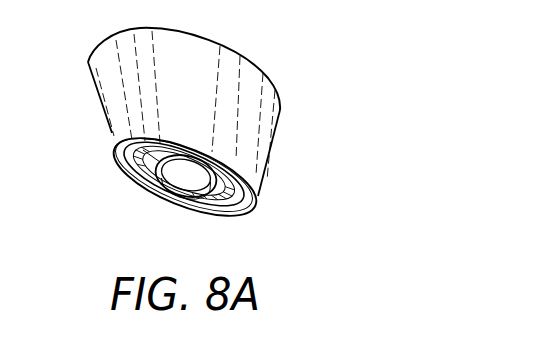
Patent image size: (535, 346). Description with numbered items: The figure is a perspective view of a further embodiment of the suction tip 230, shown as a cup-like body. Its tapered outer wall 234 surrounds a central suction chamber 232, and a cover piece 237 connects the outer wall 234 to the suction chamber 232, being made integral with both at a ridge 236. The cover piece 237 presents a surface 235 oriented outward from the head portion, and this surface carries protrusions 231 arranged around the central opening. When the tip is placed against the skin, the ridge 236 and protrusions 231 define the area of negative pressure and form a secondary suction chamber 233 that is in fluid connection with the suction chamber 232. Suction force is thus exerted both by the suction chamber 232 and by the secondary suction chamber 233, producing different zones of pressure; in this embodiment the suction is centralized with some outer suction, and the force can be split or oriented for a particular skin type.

The suction tip 230 is at (256, 49).
The protrusions 231 is at (182, 221).
The suction chamber 232 is at (147, 197).
The secondary suction chamber 233 is at (112, 134).
The outer wall 234 is at (262, 117).
The surface 235 is at (221, 193).
The ridge 236 is at (122, 161).
The cover piece 237 is at (245, 180).